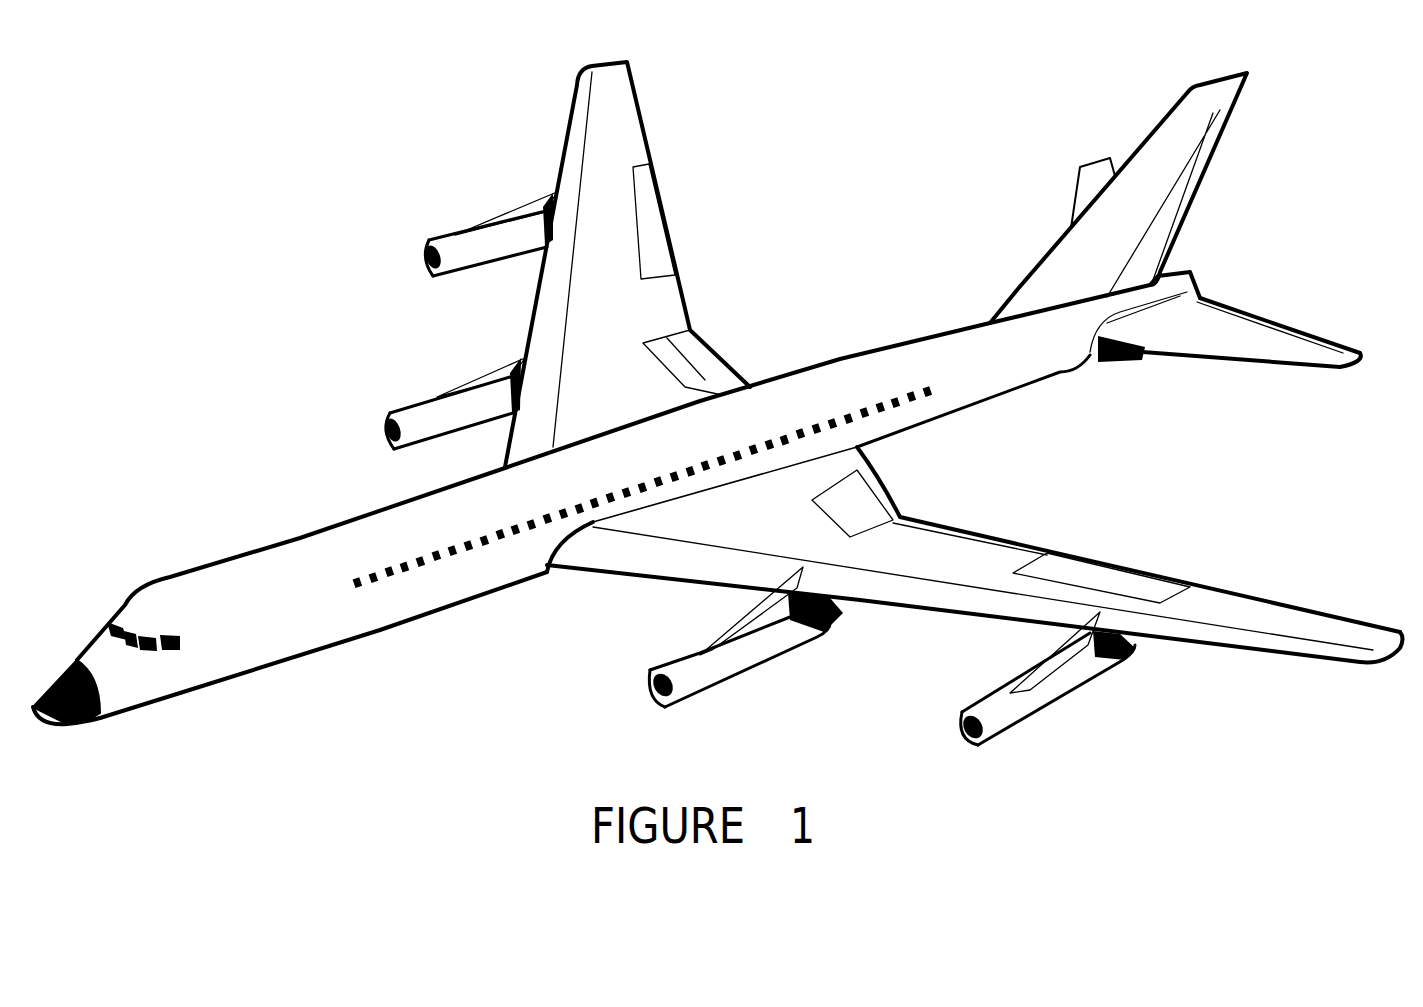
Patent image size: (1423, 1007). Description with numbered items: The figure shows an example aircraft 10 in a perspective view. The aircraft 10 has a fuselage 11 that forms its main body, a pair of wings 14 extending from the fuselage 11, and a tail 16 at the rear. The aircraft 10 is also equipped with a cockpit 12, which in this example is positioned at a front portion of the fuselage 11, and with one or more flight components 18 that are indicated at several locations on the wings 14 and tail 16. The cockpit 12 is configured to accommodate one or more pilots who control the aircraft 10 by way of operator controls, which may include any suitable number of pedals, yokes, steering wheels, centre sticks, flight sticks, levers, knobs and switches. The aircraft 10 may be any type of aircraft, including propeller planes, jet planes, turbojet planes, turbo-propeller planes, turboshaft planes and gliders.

The aircraft 10 is at (137, 175).
The fuselage 11 is at (450, 658).
The cockpit 12 is at (107, 597).
The wings 14 is at (543, 143).
The tail 16 is at (1140, 117).
The flight components 18 is at (730, 343).